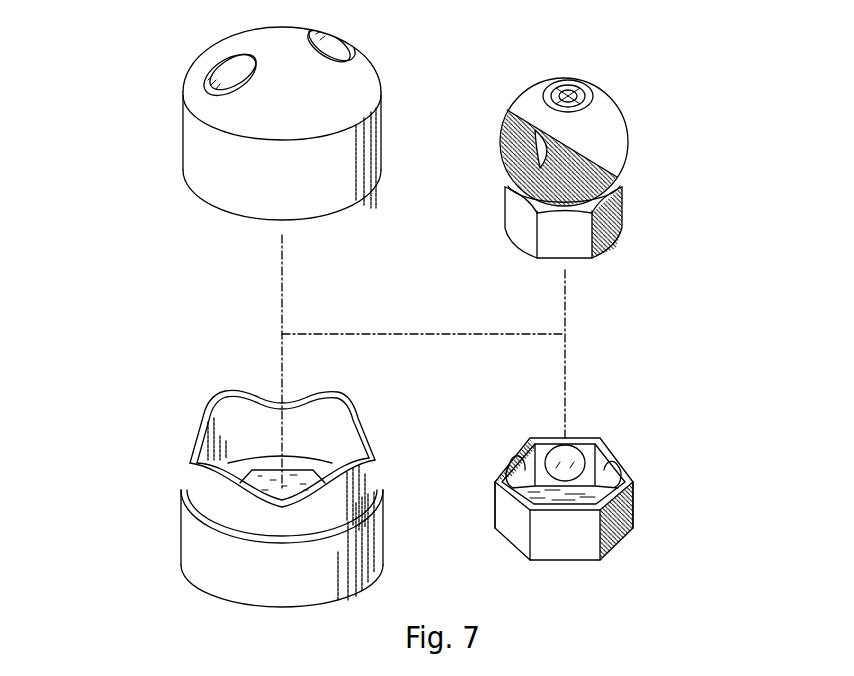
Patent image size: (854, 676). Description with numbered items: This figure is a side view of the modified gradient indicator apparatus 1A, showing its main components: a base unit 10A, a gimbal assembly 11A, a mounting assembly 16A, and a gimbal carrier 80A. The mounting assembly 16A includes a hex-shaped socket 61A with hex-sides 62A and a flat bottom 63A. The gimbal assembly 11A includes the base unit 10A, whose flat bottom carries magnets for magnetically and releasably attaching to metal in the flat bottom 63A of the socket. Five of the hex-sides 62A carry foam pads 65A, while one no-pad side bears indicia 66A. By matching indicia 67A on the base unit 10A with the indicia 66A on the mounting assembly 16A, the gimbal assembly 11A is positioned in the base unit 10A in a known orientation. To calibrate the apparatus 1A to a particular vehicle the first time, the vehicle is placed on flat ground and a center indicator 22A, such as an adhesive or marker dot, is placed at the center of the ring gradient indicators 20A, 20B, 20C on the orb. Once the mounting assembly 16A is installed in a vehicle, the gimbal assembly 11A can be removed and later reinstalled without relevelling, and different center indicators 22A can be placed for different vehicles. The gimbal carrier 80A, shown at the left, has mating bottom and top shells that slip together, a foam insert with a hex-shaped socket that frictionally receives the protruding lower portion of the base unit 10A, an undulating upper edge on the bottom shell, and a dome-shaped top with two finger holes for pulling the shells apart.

The gradient indicator apparatus 1A is at (668, 73).
The base unit 10A is at (623, 210).
The gimbal assembly 11A is at (628, 140).
The mounting assembly 16A is at (666, 460).
The ring gradient indicator 20A is at (540, 88).
The ring gradient indicator 20B is at (543, 94).
The ring gradient indicator 20C is at (551, 100).
The center indicator 22A is at (578, 84).
The hex-shaped socket 61A is at (590, 447).
The hex-sides 62A is at (632, 527).
The flat bottom 63A is at (528, 500).
The foam pads 65A is at (548, 455).
The indicia 66A is at (573, 543).
The indicia 67A is at (580, 237).
The gimbal carrier 80A is at (158, 45).